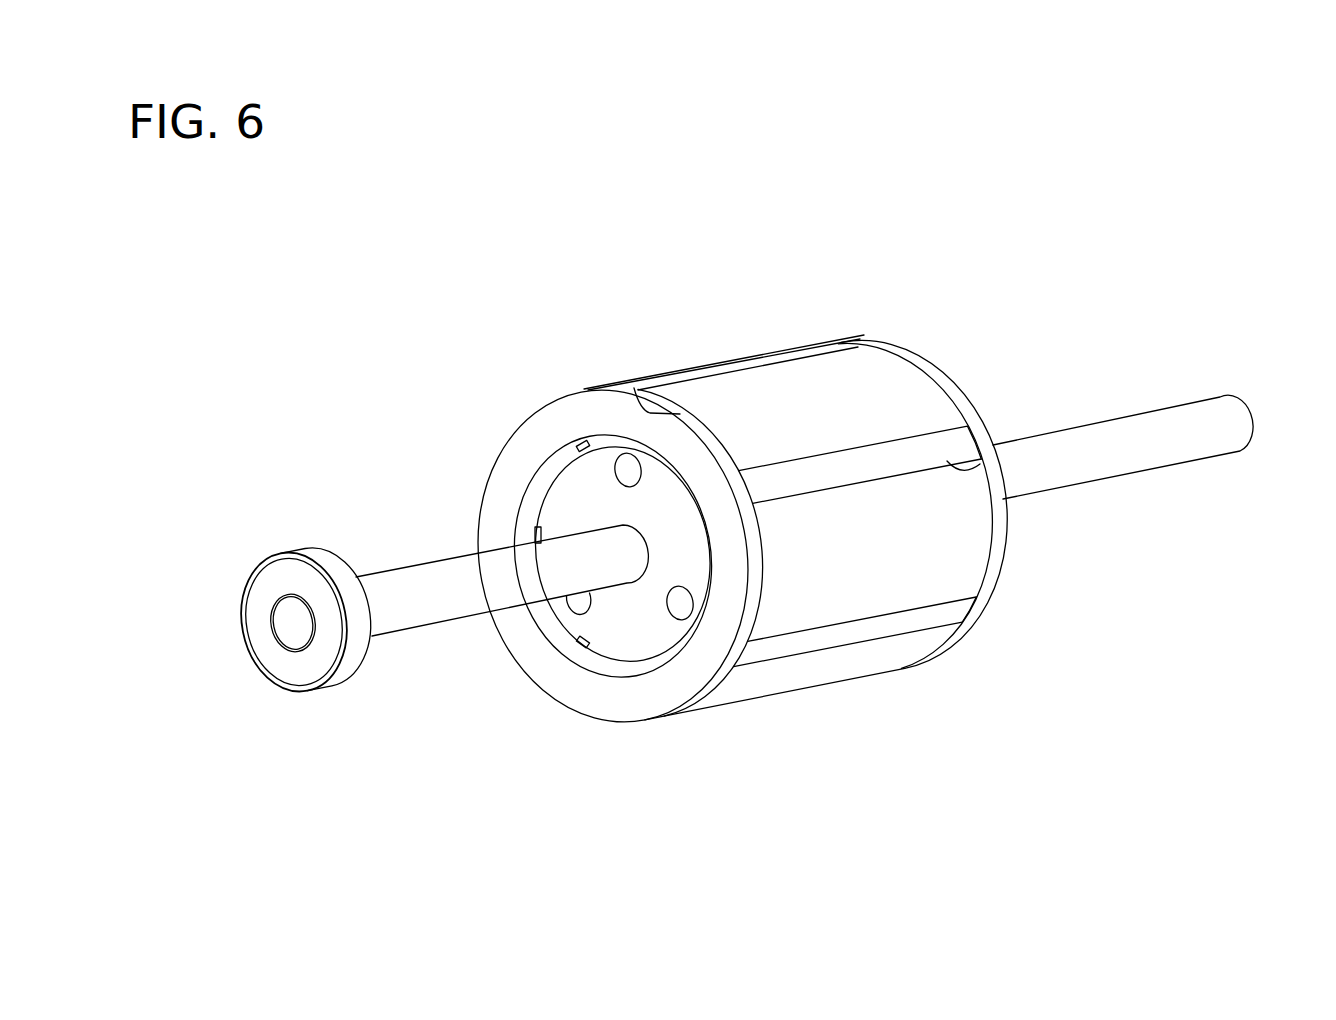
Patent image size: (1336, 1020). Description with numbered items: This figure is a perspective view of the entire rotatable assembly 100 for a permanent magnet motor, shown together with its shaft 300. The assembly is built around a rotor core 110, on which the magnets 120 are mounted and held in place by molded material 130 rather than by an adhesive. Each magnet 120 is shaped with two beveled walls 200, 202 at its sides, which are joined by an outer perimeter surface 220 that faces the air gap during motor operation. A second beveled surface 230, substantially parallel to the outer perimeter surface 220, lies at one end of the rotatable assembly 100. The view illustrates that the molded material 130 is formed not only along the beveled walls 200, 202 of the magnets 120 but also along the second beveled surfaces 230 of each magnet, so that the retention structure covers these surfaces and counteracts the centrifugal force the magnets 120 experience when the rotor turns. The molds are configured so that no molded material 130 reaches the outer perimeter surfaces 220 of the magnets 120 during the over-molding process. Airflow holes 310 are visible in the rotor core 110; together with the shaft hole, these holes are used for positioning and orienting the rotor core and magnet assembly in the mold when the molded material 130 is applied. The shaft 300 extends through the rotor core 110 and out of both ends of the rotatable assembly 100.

The rotatable assembly 100 is at (1030, 345).
The rotor core 110 is at (630, 642).
The magnets 120 is at (900, 373).
The molded material 130 is at (565, 402).
The beveled wall 200 is at (933, 430).
The beveled wall 202 is at (997, 467).
The outer perimeter surface 220 is at (780, 388).
The second beveled surface 230 is at (643, 407).
The shaft 300 is at (1207, 445).
The airflow holes 310 is at (623, 473).